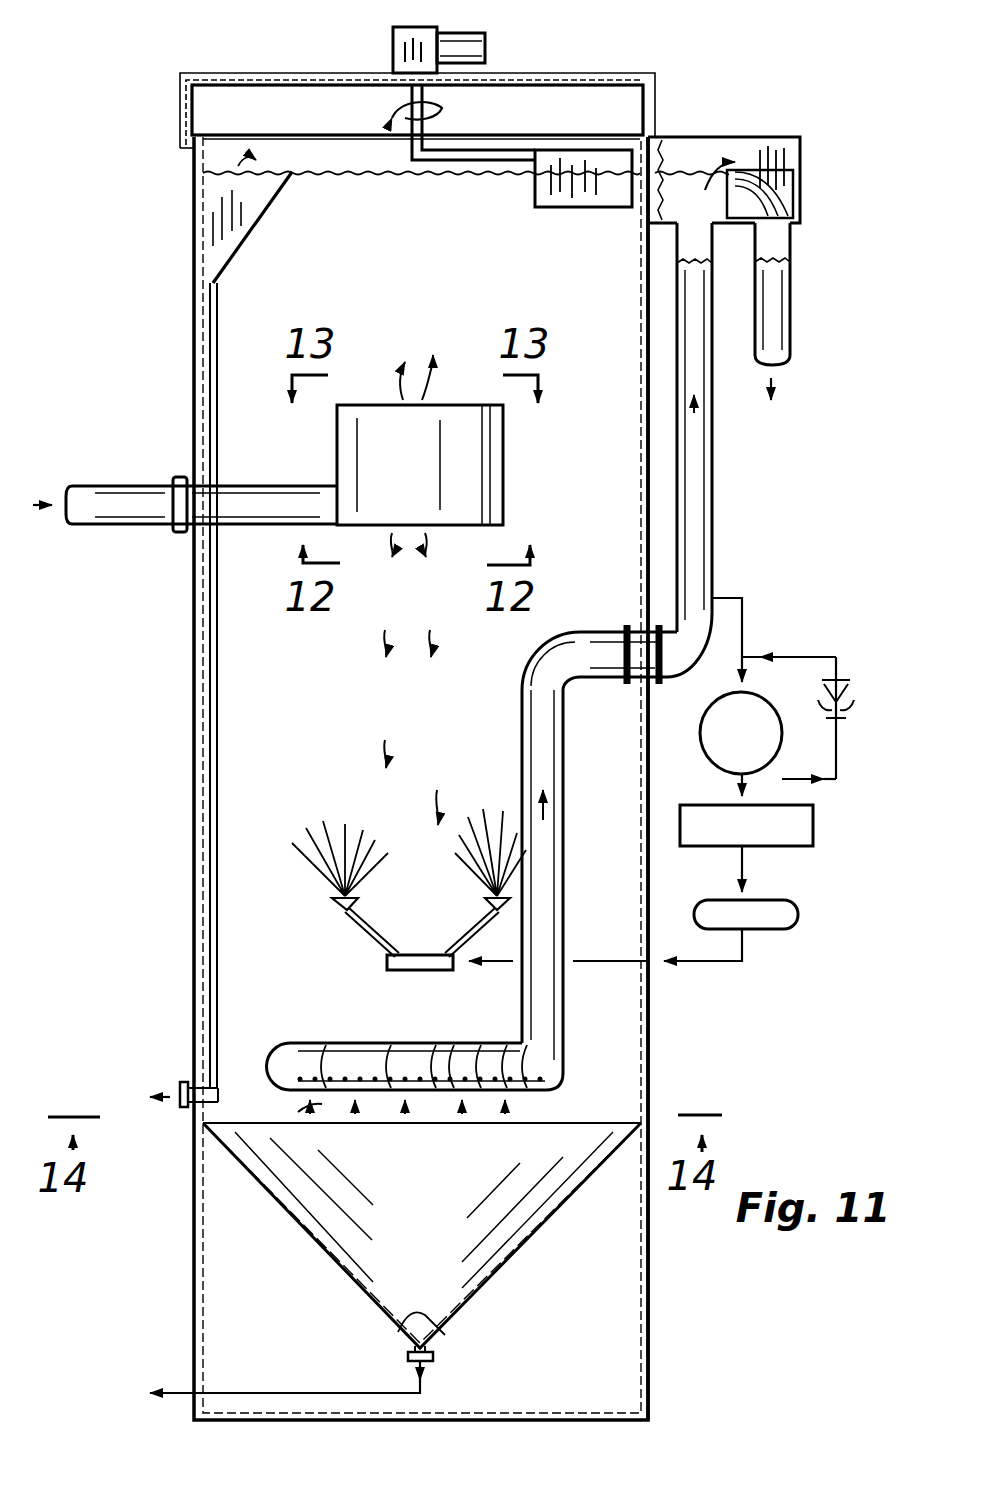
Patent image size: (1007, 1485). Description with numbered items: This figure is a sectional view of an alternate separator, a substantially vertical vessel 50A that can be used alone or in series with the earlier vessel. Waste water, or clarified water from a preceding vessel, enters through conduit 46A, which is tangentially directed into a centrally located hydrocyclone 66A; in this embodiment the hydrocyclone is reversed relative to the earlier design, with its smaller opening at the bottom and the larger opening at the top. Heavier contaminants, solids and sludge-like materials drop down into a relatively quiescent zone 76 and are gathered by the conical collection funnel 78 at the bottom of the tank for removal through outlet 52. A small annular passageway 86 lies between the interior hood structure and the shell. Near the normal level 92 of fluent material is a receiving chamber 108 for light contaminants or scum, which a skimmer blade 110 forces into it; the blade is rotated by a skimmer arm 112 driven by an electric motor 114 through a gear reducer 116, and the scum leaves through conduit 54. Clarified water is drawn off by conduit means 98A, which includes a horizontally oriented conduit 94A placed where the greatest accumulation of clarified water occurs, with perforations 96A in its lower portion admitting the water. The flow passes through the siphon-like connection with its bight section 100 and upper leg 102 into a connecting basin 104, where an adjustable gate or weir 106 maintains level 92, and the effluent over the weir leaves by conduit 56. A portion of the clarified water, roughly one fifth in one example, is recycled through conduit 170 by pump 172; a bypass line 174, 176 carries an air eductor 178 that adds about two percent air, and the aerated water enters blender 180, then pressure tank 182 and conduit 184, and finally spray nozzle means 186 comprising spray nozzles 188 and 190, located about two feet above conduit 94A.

The conduit 46A is at (110, 512).
The vessel 50A is at (651, 887).
The outlet 52 is at (433, 1352).
The conduit 54 is at (196, 1108).
The conduit 56 is at (778, 327).
The hydrocyclone 66A is at (423, 467).
The quiescent zone 76 is at (462, 897).
The conical collection funnel 78 is at (545, 1215).
The annular passageway 86 is at (610, 583).
The normal level 92 is at (342, 172).
The horizontally oriented conduit 94A is at (345, 1050).
The perforations 96A is at (500, 1060).
The conduit means 98A is at (540, 745).
The bight section 100 is at (692, 664).
The upper leg 102 is at (713, 510).
The connecting basin 104 is at (724, 180).
The adjustable gate or weir 106 is at (800, 190).
The receiving chamber 108 is at (263, 207).
The skimmer blade 110 is at (590, 160).
The skimmer arm 112 is at (490, 155).
The electric motor 114 is at (485, 40).
The gear reducer 116 is at (393, 45).
The conduit 170 is at (744, 612).
The pump 172 is at (715, 768).
The bypass line 174 is at (807, 785).
The bypass line 176 is at (808, 662).
The air eductor 178 is at (852, 690).
The blender 180 is at (813, 838).
The pressure tank 182 is at (800, 914).
The conduit 184 is at (694, 966).
The spray nozzle means 186 is at (378, 873).
The spray nozzle 188 is at (333, 900).
The spray nozzle 190 is at (512, 898).